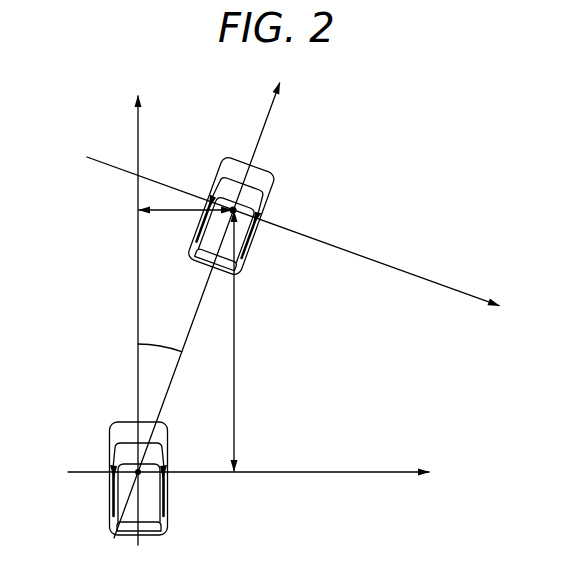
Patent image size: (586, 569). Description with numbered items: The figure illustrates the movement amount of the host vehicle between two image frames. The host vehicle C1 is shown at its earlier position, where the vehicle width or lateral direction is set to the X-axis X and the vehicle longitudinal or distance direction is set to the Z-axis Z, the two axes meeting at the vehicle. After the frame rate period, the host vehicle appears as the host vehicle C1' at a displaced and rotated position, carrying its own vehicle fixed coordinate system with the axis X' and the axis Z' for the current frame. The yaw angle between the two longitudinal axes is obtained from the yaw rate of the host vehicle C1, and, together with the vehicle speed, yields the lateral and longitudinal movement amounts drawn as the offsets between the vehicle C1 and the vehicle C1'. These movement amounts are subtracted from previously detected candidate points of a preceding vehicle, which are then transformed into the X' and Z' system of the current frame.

The host vehicle C1 is at (105, 478).
The host vehicle after movement C1' is at (270, 216).
The Z-axis Z is at (123, 320).
The X-axis X is at (249, 488).
The Z'-axis of vehicle fixed coordinate system Z' is at (197, 308).
The X'-axis of vehicle fixed coordinate system X' is at (293, 251).